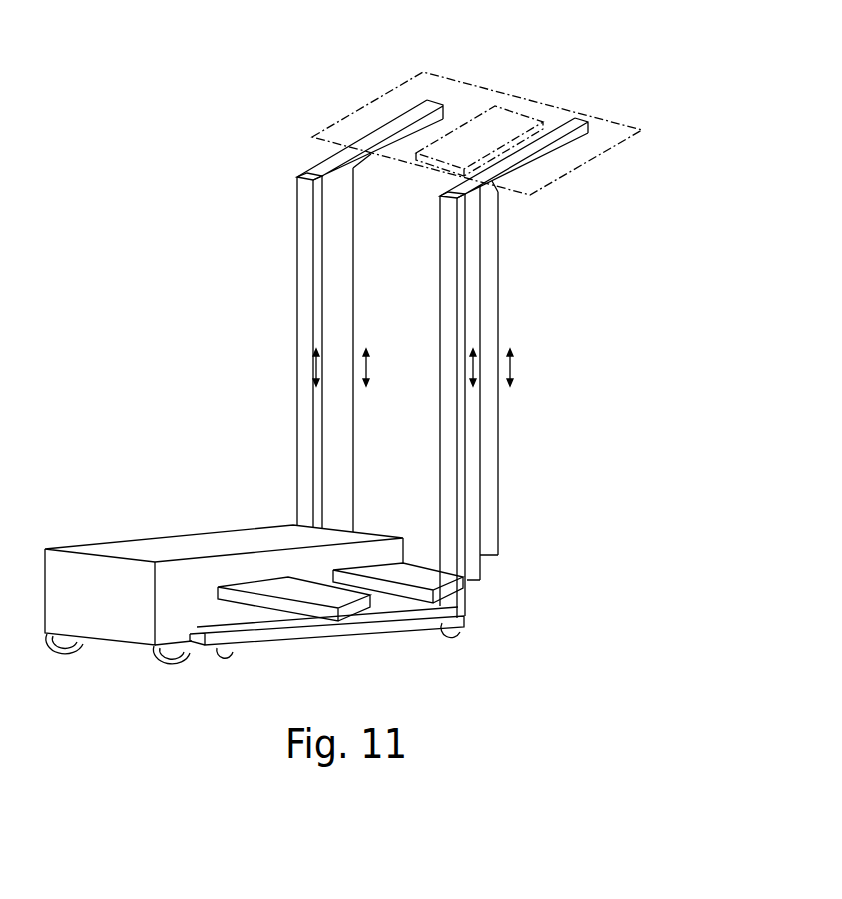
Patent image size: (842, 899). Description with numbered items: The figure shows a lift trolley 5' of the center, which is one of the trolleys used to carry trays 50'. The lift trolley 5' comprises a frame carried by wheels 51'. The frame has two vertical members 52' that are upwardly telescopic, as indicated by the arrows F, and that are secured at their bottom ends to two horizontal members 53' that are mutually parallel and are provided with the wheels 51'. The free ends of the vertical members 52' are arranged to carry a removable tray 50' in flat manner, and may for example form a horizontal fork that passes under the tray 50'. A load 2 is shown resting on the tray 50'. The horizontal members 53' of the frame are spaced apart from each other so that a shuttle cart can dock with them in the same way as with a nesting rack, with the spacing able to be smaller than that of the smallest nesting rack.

The load / object 2 is at (490, 128).
The tray 50' is at (492, 111).
The vertical member 52' is at (467, 367).
The horizontal member 53' is at (327, 641).
The wheel 51' is at (296, 660).
The lift trolley 5' is at (221, 366).
The arrows F is at (367, 372).